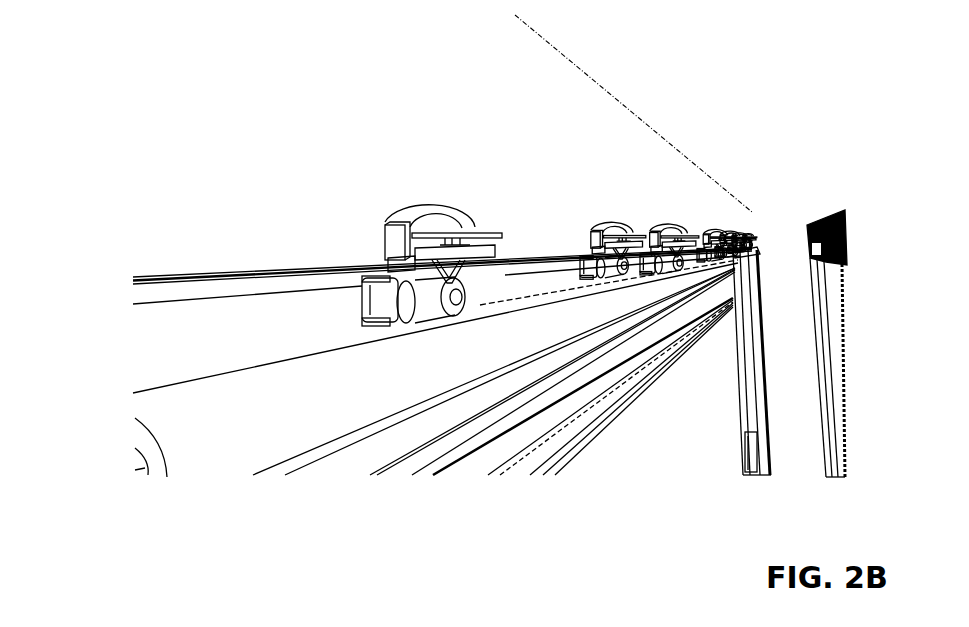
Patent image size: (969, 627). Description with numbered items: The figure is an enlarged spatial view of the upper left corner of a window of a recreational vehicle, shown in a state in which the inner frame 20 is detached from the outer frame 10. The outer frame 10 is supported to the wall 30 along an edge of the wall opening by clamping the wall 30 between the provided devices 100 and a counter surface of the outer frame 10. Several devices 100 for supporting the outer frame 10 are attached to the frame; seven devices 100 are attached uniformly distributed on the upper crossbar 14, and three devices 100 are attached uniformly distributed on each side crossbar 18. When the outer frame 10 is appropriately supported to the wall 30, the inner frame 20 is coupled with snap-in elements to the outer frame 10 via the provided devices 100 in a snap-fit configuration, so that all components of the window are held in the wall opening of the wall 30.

The outer frame 10 is at (305, 316).
The upper crossbar 14 is at (493, 297).
The side crossbar 18 is at (740, 392).
The inner frame 20 is at (823, 216).
The wall 30 is at (555, 100).
The device for supporting the frame 100 is at (517, 237).